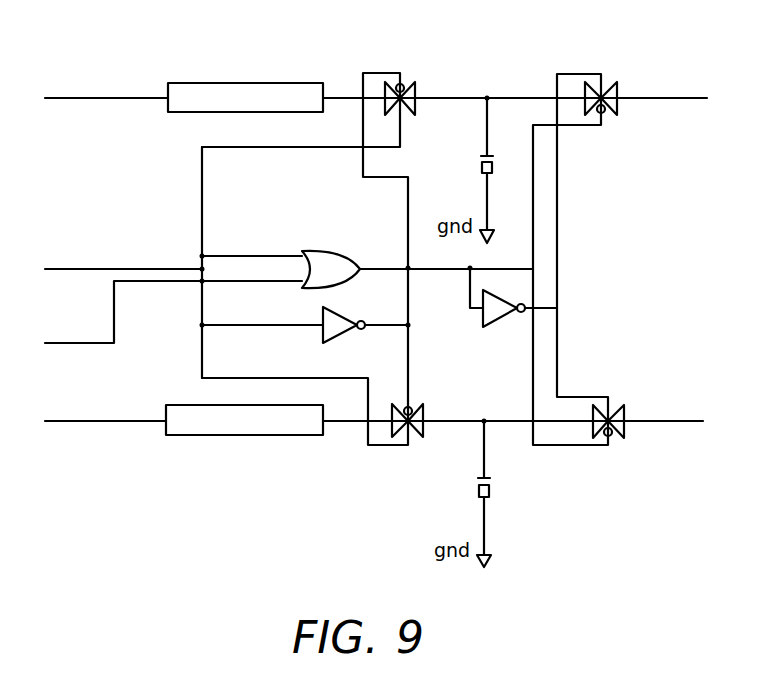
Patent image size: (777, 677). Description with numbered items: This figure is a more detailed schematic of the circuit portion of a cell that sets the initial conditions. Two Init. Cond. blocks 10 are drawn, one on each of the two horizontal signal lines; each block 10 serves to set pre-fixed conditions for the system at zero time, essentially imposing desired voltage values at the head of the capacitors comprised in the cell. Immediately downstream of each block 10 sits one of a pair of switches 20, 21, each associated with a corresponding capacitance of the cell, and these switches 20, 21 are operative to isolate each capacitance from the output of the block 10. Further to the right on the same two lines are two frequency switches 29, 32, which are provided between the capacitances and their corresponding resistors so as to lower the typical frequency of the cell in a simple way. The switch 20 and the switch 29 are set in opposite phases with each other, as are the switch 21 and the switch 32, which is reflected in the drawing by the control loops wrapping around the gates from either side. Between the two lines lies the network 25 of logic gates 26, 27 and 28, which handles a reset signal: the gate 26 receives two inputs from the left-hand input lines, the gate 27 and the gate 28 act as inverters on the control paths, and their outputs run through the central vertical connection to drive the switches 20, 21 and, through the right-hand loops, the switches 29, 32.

The Init. Cond. block 10 is at (245, 82).
The switch 20 is at (415, 91).
The switch 21 is at (419, 431).
The network of logic gates 25 is at (423, 297).
The logic gate 26 is at (326, 250).
The logic gate 27 is at (345, 335).
The logic gate 28 is at (500, 322).
The switch 29 is at (617, 107).
The switch 32 is at (624, 430).